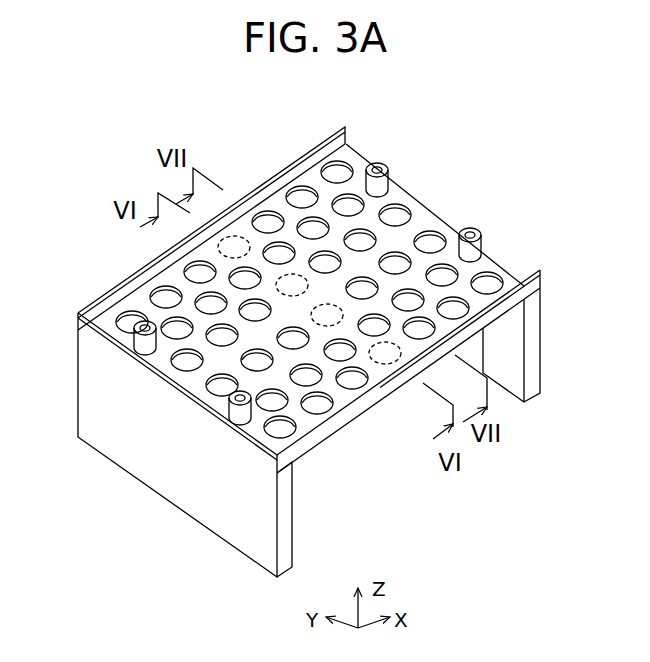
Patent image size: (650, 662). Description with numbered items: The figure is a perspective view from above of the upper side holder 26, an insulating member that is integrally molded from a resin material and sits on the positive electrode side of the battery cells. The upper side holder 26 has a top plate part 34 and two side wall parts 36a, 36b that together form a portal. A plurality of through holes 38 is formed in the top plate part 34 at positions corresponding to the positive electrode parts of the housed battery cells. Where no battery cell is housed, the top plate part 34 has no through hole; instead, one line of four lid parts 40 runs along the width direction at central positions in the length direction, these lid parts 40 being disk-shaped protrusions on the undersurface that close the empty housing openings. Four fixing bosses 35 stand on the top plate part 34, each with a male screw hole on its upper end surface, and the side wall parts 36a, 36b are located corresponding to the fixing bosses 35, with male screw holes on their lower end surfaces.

The upper side holder 26 is at (442, 205).
The top plate part 34 is at (398, 197).
The fixing boss 35 is at (378, 161).
The side wall part 36a is at (148, 443).
The side wall part 36b is at (542, 333).
The through hole 38 is at (340, 193).
The lid part 40 is at (238, 233).